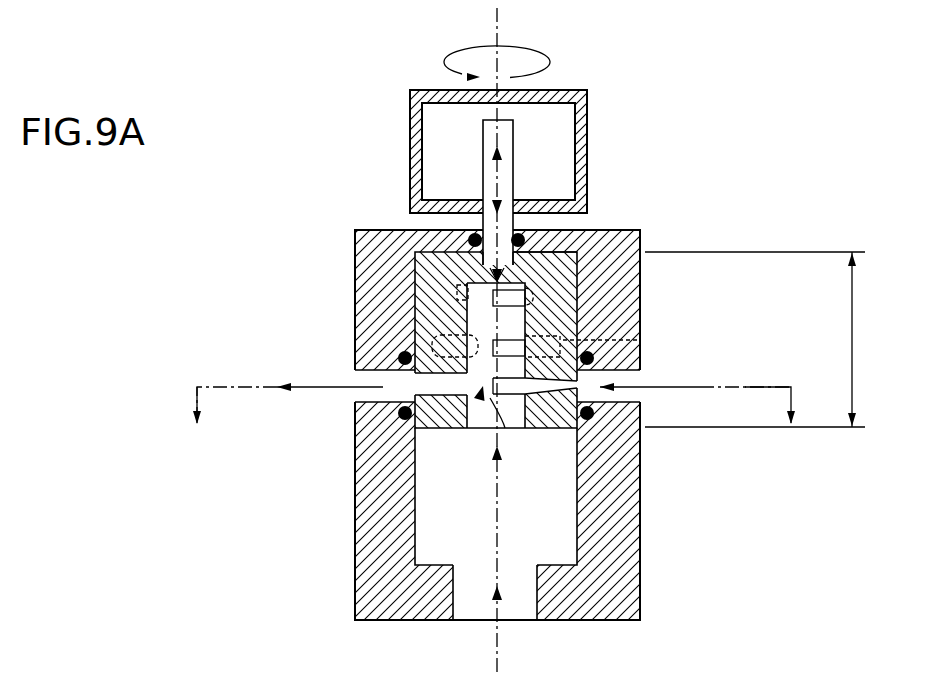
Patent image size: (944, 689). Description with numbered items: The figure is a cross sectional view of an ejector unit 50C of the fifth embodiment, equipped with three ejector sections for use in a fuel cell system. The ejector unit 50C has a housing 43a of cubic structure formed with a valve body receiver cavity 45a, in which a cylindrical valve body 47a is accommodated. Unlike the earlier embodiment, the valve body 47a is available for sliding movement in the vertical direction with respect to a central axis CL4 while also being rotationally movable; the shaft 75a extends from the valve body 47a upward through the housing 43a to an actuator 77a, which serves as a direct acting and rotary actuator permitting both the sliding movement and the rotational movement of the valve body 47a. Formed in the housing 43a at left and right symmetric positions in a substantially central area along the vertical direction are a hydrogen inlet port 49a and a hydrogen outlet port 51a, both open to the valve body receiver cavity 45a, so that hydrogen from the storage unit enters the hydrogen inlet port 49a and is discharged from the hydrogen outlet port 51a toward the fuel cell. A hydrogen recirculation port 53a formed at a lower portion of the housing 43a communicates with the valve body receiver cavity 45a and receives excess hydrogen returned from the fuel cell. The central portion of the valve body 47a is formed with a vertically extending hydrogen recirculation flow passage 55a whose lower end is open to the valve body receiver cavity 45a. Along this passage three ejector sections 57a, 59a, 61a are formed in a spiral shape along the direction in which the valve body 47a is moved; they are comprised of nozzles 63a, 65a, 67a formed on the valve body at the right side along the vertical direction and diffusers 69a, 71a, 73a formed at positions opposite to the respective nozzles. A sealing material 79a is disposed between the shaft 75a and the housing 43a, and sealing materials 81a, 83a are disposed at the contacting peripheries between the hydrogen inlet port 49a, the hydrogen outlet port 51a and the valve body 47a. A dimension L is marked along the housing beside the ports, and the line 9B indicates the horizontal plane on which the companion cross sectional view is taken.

The housing 43a is at (613, 607).
The valve body receiver cavity 45a is at (435, 528).
The valve body 47a is at (645, 254).
The hydrogen inlet port 49a is at (640, 372).
The hydrogen outlet port 51a is at (357, 372).
The hydrogen recirculation port 53a is at (513, 605).
The hydrogen recirculation flow passage 55a is at (512, 430).
The ejector section 57a is at (515, 253).
The ejector section 59a is at (504, 327).
The ejector section 61a is at (467, 432).
The nozzle 63a is at (580, 253).
The nozzle 65a is at (555, 340).
The nozzle 67a is at (440, 445).
The diffuser 69a is at (457, 283).
The diffuser 71a is at (432, 318).
The diffuser 73a is at (483, 428).
The shaft 75a is at (518, 130).
The actuator 77a is at (432, 90).
The sealing material 79a is at (422, 232).
The sealing material 81a is at (597, 414).
The sealing material 83a is at (397, 413).
The ejector unit 50C is at (707, 128).
The central axis CL4 is at (500, 14).
The stroke length L is at (757, 339).
The line 9B- 9B is at (491, 405).